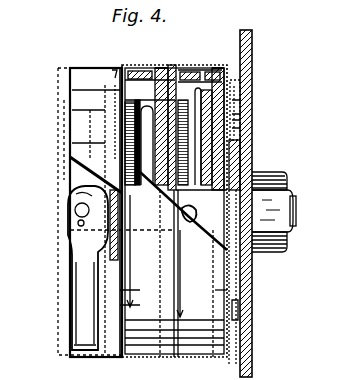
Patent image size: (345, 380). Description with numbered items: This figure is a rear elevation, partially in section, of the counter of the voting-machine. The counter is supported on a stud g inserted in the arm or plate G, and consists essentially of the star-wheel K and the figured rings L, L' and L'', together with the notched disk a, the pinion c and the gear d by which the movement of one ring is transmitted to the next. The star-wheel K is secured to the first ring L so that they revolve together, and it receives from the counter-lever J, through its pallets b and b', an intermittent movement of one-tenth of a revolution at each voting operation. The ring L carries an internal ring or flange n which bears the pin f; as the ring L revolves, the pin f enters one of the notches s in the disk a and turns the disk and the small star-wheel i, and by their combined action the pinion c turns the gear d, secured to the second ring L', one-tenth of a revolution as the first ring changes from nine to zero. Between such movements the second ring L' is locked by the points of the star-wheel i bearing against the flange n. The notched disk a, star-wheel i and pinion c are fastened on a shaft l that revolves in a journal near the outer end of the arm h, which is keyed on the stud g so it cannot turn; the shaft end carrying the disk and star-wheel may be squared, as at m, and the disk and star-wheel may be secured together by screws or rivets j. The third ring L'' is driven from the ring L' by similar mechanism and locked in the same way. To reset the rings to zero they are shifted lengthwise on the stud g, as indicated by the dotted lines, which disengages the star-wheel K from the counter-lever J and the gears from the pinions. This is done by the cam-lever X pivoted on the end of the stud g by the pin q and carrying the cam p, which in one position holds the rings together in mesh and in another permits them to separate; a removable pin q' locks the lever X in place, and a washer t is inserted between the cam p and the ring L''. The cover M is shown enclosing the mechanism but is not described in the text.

The arm or plate G is at (252, 324).
The cam-lever X is at (72, 132).
The third ring L'' is at (122, 224).
The cam p is at (88, 268).
The pin q is at (63, 191).
The removable pin q' is at (59, 218).
The washer t is at (114, 212).
The notch s is at (113, 77).
The cover M is at (160, 65).
The pinion c is at (132, 102).
The notched disk a is at (145, 108).
The arm h is at (170, 135).
The shaft l is at (208, 122).
The pin f is at (149, 75).
The internal ring or flange n is at (172, 70).
The gear d is at (168, 205).
The stud g is at (196, 214).
The second ring L' is at (172, 285).
The first ring L is at (202, 305).
The counter-lever J is at (227, 282).
The screws or rivets j is at (238, 156).
The star-wheel i is at (234, 107).
The squared shaft end m is at (234, 123).
The pallet b' is at (265, 112).
The pallet b is at (249, 307).
The star-wheel K is at (250, 265).